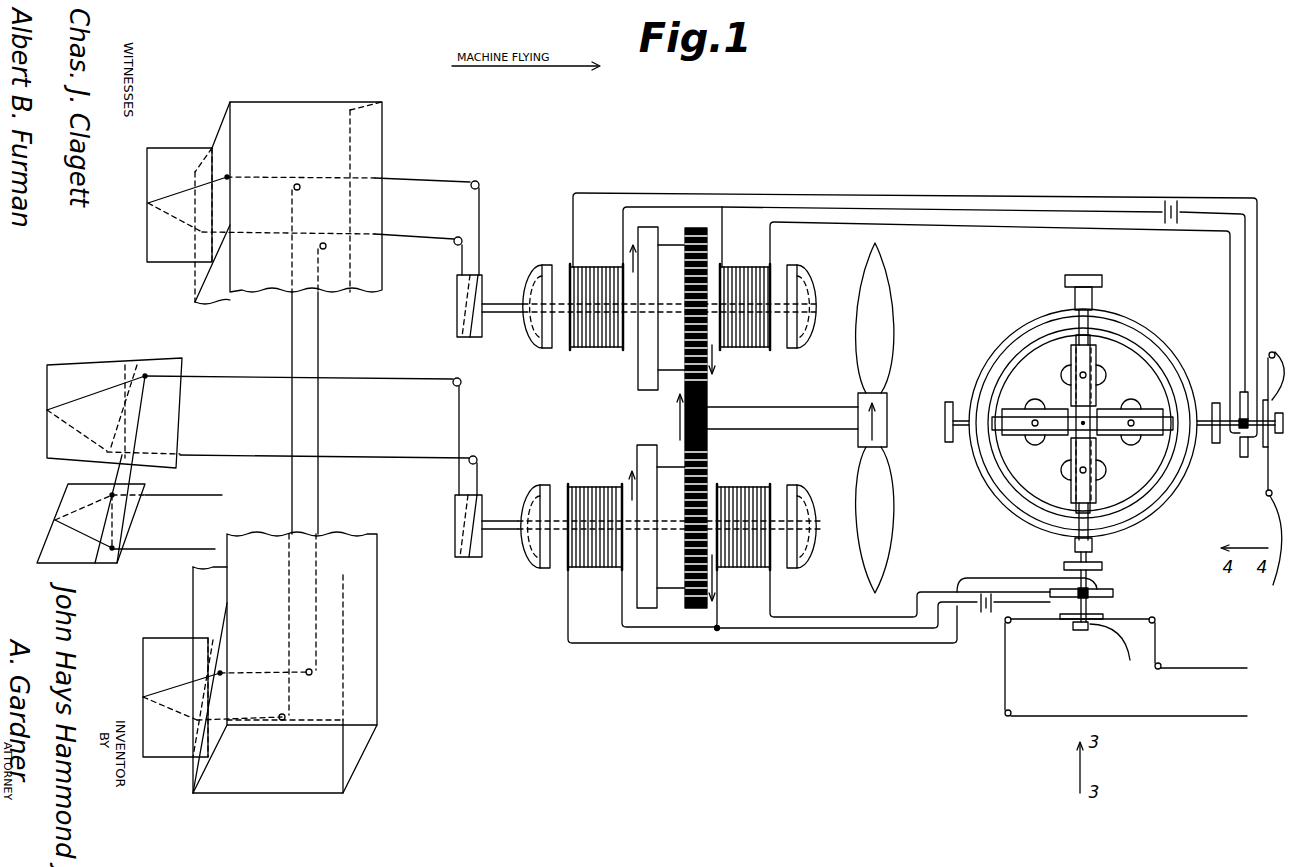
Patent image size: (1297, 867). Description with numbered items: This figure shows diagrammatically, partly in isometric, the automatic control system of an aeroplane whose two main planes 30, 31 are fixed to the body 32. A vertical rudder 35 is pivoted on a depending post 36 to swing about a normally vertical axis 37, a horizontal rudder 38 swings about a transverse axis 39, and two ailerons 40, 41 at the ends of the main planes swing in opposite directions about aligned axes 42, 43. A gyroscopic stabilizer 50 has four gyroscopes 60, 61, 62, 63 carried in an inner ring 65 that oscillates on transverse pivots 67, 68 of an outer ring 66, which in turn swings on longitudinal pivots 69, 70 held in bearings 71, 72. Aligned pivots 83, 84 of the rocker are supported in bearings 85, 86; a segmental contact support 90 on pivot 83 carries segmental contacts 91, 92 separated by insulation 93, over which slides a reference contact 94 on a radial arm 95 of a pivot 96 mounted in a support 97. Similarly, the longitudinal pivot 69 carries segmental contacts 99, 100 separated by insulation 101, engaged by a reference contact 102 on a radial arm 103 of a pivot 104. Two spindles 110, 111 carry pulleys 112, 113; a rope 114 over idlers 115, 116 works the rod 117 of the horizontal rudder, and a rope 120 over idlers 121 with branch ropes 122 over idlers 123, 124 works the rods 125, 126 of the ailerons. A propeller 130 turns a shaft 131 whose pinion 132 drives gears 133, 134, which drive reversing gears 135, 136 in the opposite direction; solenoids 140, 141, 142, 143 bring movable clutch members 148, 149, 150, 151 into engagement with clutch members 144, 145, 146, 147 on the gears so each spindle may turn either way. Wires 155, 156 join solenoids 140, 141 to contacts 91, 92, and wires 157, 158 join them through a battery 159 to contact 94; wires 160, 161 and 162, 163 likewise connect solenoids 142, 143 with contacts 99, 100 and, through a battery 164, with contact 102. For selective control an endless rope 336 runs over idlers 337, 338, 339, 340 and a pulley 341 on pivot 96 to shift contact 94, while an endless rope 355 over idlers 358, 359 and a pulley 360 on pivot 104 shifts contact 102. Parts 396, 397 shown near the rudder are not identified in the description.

The main plane 30 is at (378, 663).
The main plane 31 is at (297, 790).
The body or frame 32 is at (168, 365).
The vertical rudder 35 is at (62, 556).
The vertical post 36 is at (117, 565).
The axis of vertical rudder 37 is at (125, 460).
The horizontal rudder 38 is at (47, 378).
The axis of horizontal rudder 39 is at (126, 367).
The aileron 40 is at (163, 645).
The aileron 41 is at (170, 156).
The aileron axis 42 is at (228, 648).
The aileron axis 43 is at (222, 145).
The gyroscopic stabilizer 50 is at (1180, 342).
The gyroscope 60 is at (1096, 386).
The gyroscope 61 is at (1152, 437).
The gyroscope 62 is at (1093, 470).
The gyroscope 63 is at (1056, 436).
The inner ring 65 is at (1164, 362).
The outer ring 66 is at (1185, 370).
The transverse pivot 67 is at (1076, 523).
The transverse pivot 68 is at (1074, 318).
The longitudinal pivot 69 is at (1204, 430).
The longitudinal pivot 70 is at (957, 442).
The bearing 71 is at (1216, 410).
The bearing 72 is at (949, 402).
The transverse pivot of rocker 83 is at (1092, 552).
The transverse pivot of rocker 84 is at (1093, 293).
The bearing 85 is at (1103, 567).
The bearing 86 is at (1079, 277).
The segmental contact support 90 is at (1103, 585).
The segmental electric contact 91 is at (1056, 598).
The segmental electric contact 92 is at (1114, 593).
The intermediate insulation 93 is at (1068, 585).
The transverse reference contact 94 is at (1076, 600).
The radial arm 95 is at (1096, 612).
The transverse pivot 96 is at (1110, 642).
The support 97 is at (1074, 624).
The segmental electric contact 99 is at (1244, 460).
The segmental electric contact 100 is at (1240, 398).
The intermediate insulation 101 is at (1244, 458).
The longitudinal reference contact 102 is at (1230, 438).
The radial arm 103 is at (1257, 440).
The pivot 104 is at (1267, 450).
The spindle 110 is at (497, 521).
The spindle 111 is at (503, 302).
The pulley 112 is at (455, 537).
The pulley 113 is at (457, 299).
The flexible wire or rope 114 is at (404, 380).
The idler 115 is at (476, 457).
The idler 116 is at (460, 380).
The rod 117 is at (150, 386).
The flexible wire or rope 120 is at (440, 180).
The idlers 121 is at (481, 182).
The branch wires or ropes 122 is at (328, 341).
The idlers 123 is at (300, 184).
The idlers 124 is at (286, 714).
The rod 125 is at (222, 693).
The rod 126 is at (226, 197).
The propeller 130 is at (882, 333).
The propeller shaft 131 is at (795, 413).
The pinion 132 is at (712, 403).
The driving gear 133 is at (708, 480).
The driving gear 134 is at (712, 368).
The reversing gear 135 is at (640, 450).
The reversing gear 136 is at (637, 372).
The solenoid 140 is at (752, 487).
The solenoid 141 is at (592, 490).
The solenoid 142 is at (742, 275).
The solenoid 143 is at (592, 266).
The clutch member 144 is at (792, 565).
The clutch member 145 is at (547, 565).
The clutch member 146 is at (800, 280).
The clutch member 147 is at (540, 268).
The movable clutch member 148 is at (812, 550).
The movable clutch member 149 is at (540, 490).
The movable clutch member 150 is at (810, 338).
The movable clutch member 151 is at (533, 340).
The wire 155 is at (890, 617).
The wire 156 is at (884, 630).
The wire 157 is at (718, 604).
The wire 158 is at (804, 644).
The battery 159 is at (1006, 612).
The wire 160 is at (984, 226).
The wire 161 is at (992, 209).
The wire 162 is at (722, 222).
The wire 163 is at (686, 193).
The battery 164 is at (1174, 201).
The endless rope or wire 336 is at (1240, 668).
The idler 337 is at (1162, 664).
The idler 338 is at (1156, 620).
The idler 339 is at (1006, 624).
The idler 340 is at (1005, 716).
The pulley 341 is at (1130, 676).
The endless rope or wire 355 is at (1245, 345).
The idler 358 is at (1269, 497).
The idler 359 is at (1257, 330).
The pulley 360 is at (1272, 352).
The cable 396 is at (205, 495).
The cable 397 is at (112, 530).